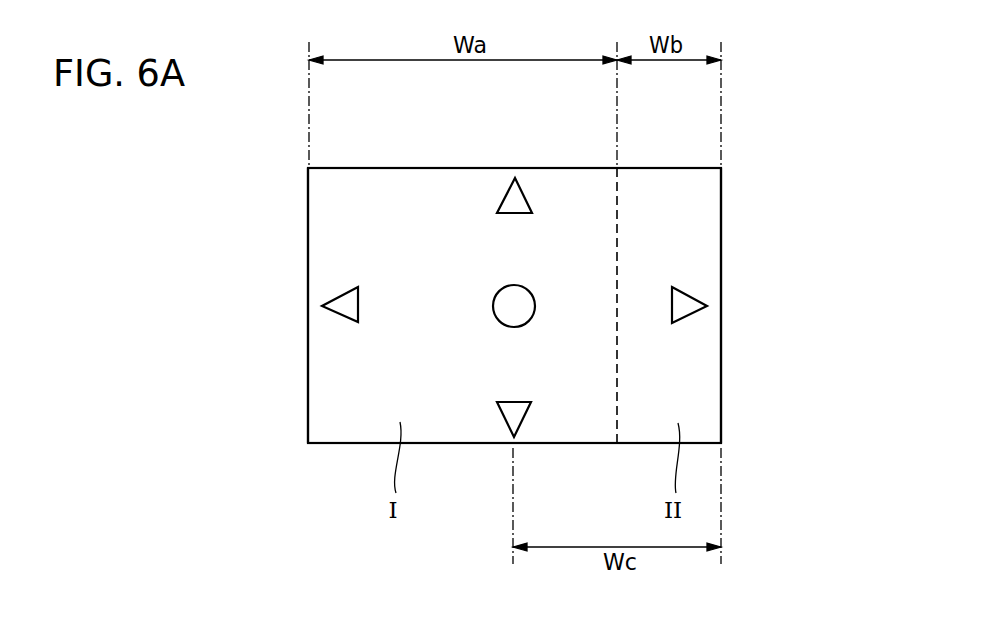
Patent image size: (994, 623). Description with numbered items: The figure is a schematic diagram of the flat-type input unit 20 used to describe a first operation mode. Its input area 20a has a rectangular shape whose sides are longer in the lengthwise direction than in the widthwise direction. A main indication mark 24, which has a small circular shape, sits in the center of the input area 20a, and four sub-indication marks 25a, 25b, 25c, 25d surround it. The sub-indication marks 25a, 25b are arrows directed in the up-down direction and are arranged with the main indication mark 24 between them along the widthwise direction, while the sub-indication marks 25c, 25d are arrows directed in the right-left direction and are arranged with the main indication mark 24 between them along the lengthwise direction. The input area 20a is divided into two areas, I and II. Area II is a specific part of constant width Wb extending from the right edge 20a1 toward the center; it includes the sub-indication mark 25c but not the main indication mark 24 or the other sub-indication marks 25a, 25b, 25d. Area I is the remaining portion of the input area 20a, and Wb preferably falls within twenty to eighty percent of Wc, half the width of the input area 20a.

The flat-type input unit 20 is at (735, 208).
The input area 20a is at (338, 405).
The right edge 20a1 is at (722, 382).
The main indication mark 24 is at (507, 310).
The sub-indication mark 25a is at (513, 202).
The sub-indication mark 25b is at (517, 415).
The sub-indication mark 25c is at (707, 304).
The sub-indication mark 25d is at (335, 313).